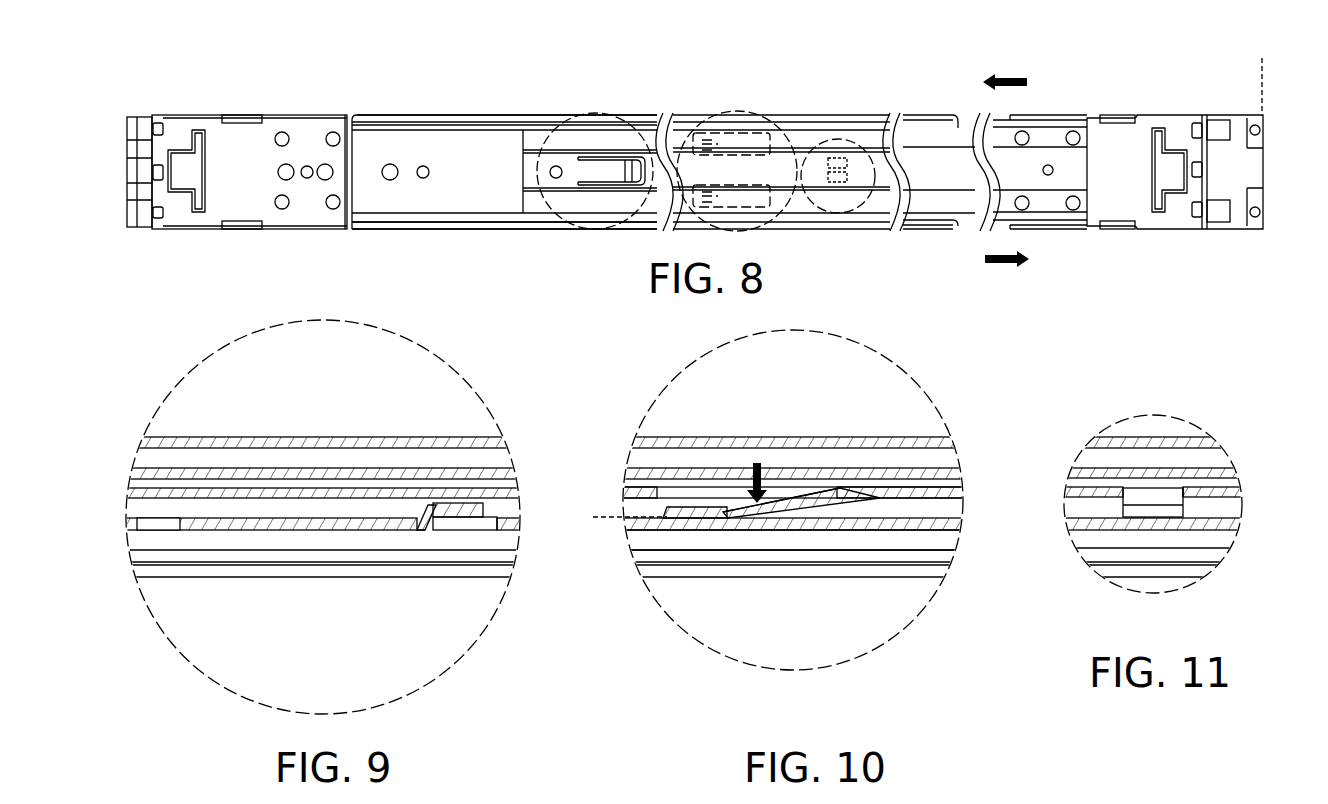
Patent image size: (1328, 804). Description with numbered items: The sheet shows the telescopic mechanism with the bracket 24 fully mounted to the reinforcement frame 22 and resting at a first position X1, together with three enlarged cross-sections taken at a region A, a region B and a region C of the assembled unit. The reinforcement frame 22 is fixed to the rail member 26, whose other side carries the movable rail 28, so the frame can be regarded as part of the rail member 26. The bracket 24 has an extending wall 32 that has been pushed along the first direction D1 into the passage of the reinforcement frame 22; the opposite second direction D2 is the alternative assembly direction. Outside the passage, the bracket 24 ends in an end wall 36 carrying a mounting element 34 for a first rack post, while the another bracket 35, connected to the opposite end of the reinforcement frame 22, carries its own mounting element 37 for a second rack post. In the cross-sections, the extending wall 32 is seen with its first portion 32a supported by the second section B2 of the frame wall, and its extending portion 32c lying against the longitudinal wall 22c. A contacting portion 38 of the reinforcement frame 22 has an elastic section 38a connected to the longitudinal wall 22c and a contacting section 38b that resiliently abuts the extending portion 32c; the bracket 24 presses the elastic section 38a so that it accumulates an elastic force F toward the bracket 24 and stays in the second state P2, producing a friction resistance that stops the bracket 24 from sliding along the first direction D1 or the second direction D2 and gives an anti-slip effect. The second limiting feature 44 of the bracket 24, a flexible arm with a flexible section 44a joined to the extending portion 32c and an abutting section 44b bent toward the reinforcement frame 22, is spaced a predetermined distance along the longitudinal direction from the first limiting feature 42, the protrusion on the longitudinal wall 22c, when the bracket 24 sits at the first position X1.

In FIG. 8, the reinforcement frame 22 is at (692, 113).
In FIG. 9, the reinforcement frame 22 is at (497, 485).
In FIG. 10, the reinforcement frame 22 is at (932, 485).
In FIG. 11, the reinforcement frame 22 is at (1205, 485).
In FIG. 8, the bracket 24 is at (1067, 112).
In FIG. 9, the bracket 24 is at (503, 552).
In FIG. 10, the bracket 24 is at (907, 563).
In FIG. 11, the bracket 24 is at (1143, 550).
In FIG. 9, the rail member 26 is at (143, 468).
In FIG. 10, the rail member 26 is at (638, 468).
In FIG. 11, the rail member 26 is at (1097, 467).
In FIG. 9, the movable rail 28 is at (170, 437).
In FIG. 10, the movable rail 28 is at (660, 437).
In FIG. 11, the movable rail 28 is at (1120, 437).
In FIG. 8, the extending wall 32 is at (963, 113).
In FIG. 9, the extending wall 32 is at (285, 537).
In FIG. 10, the extending wall 32 is at (943, 535).
In FIG. 10, the first portion 32a is at (755, 553).
In FIG. 10, the extending portion 32c is at (842, 527).
In FIG. 8, the mounting element 34 is at (1218, 113).
In FIG. 8, the another bracket 35 is at (277, 120).
In FIG. 8, the end wall 36 is at (1200, 175).
In FIG. 8, the mounting element 37 is at (143, 117).
In FIG. 10, the contacting portion 38 is at (838, 487).
In FIG. 10, the elastic section 38a is at (800, 499).
In FIG. 10, the contacting section 38b is at (700, 513).
In FIG. 8, the first limiting feature 42 is at (838, 158).
In FIG. 11, the first limiting feature 42 is at (1153, 510).
In FIG. 8, the second limiting feature 44 is at (608, 186).
In FIG. 9, the second limiting feature 44 is at (420, 503).
In FIG. 9, the flexible section 44a is at (428, 517).
In FIG. 9, the abutting section 44b is at (455, 507).
In FIG. 11, the longitudinal wall 22c is at (1217, 495).
In FIG. 8, the region A is at (580, 113).
In FIG. 8, the region B is at (760, 113).
In FIG. 8, the region C is at (828, 140).
In FIG. 8, the second section B2 is at (460, 123).
In FIG. 9, the second section B2 is at (362, 568).
In FIG. 10, the second section B2 is at (792, 570).
In FIG. 11, the second section B2 is at (1190, 568).
In FIG. 8, the first direction D1 is at (1018, 83).
In FIG. 8, the second direction D2 is at (989, 260).
In FIG. 8, the first position X1 is at (1261, 75).
In FIG. 10, the second state P2 is at (616, 517).
In FIG. 10, the elastic force F is at (758, 462).